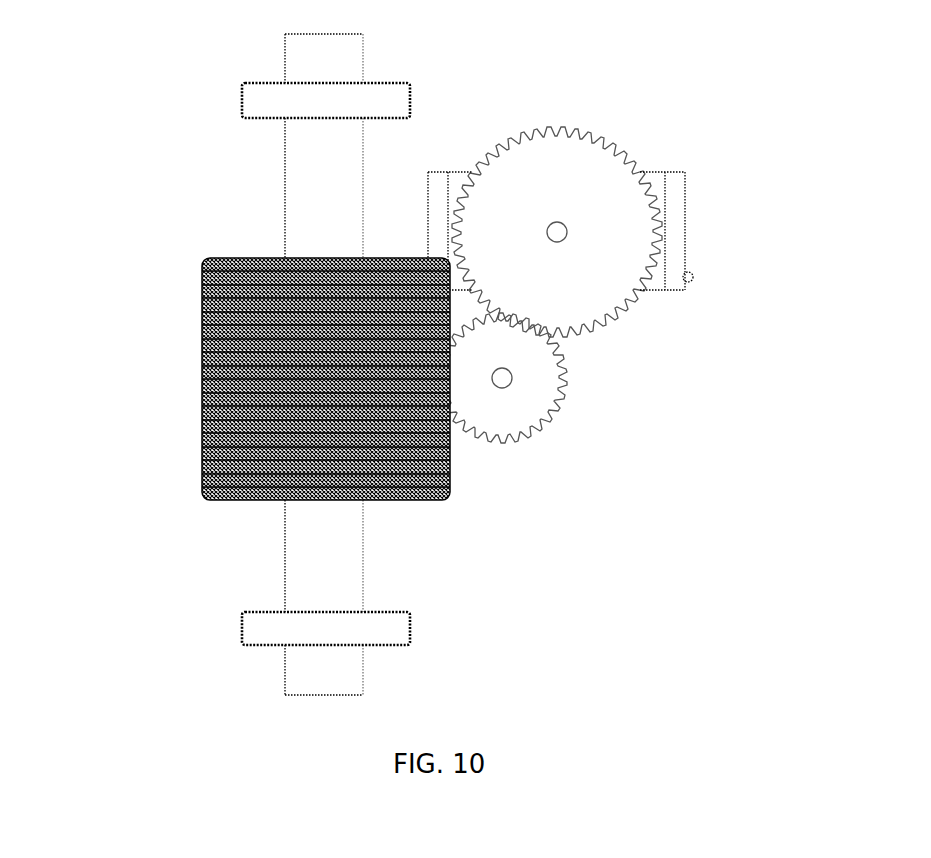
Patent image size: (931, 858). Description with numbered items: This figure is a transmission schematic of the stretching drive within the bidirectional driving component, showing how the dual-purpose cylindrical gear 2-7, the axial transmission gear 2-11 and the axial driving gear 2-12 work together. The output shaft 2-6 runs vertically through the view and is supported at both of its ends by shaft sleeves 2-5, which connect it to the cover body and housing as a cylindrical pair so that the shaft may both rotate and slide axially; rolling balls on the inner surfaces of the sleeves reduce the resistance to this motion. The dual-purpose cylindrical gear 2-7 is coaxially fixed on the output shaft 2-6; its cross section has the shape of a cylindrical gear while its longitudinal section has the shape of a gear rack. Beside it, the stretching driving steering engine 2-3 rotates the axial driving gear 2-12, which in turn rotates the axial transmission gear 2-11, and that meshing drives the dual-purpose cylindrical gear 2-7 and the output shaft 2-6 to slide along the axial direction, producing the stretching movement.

The shaft sleeve 2-5 is at (267, 105).
The output shaft 2-6 is at (290, 225).
The dual-purpose cylindrical gear 2-7 is at (207, 320).
The stretching driving steering engine 2-3 is at (662, 172).
The axial driving gear 2-12 is at (618, 278).
The axial transmission gear 2-11 is at (552, 402).